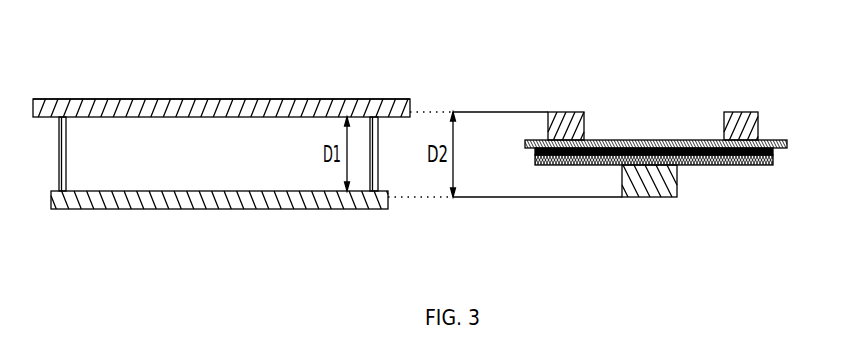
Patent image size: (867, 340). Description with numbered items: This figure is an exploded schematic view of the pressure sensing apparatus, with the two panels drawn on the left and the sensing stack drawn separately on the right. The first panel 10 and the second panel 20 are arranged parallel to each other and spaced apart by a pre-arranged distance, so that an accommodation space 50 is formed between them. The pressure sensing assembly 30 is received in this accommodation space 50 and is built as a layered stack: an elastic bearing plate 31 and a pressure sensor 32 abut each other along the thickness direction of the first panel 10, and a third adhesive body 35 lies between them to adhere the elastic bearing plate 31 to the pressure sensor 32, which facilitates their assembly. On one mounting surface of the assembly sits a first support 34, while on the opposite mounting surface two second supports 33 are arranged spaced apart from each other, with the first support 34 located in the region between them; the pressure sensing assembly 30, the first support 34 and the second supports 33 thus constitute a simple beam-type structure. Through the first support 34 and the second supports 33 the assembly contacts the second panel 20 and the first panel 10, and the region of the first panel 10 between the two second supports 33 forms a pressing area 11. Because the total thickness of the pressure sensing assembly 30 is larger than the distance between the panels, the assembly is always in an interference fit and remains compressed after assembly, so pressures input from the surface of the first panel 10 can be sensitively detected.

The first panel 10 is at (390, 108).
The pressing area 11 is at (323, 98).
The second panel 20 is at (212, 198).
The accommodation space 50 is at (188, 147).
The pressure sensing assembly 30 is at (650, 137).
The elastic bearing plate 31 is at (787, 144).
The pressure sensor 32 is at (773, 160).
The second supports 33 is at (568, 127).
The first support 34 is at (660, 180).
The third adhesive body 35 is at (535, 152).